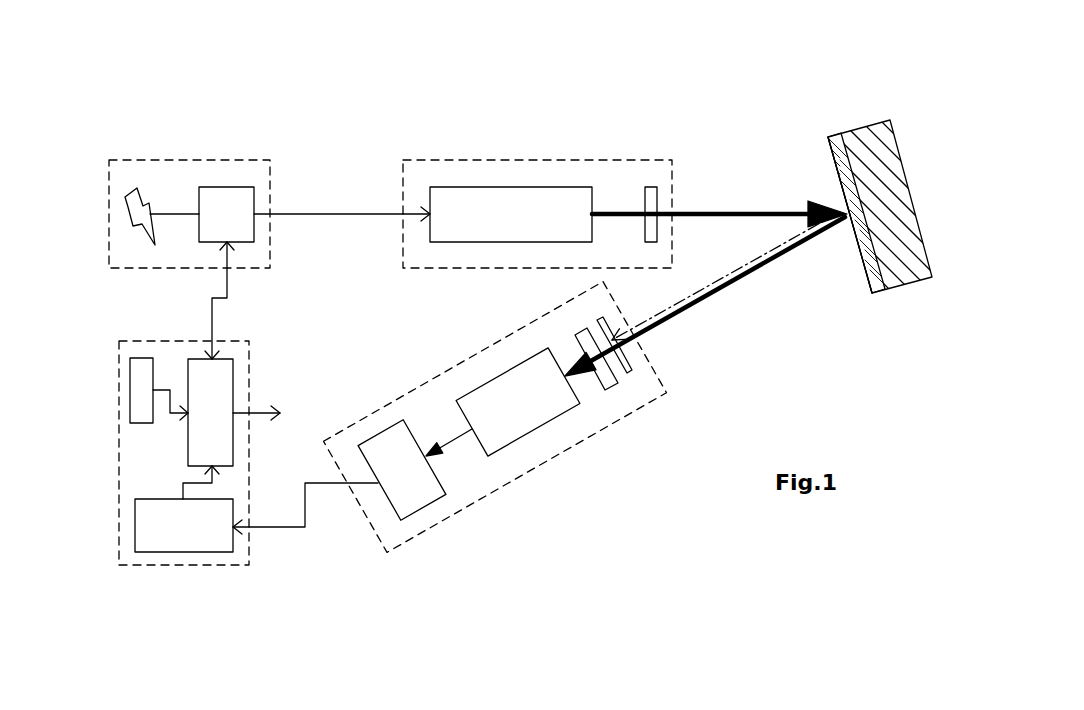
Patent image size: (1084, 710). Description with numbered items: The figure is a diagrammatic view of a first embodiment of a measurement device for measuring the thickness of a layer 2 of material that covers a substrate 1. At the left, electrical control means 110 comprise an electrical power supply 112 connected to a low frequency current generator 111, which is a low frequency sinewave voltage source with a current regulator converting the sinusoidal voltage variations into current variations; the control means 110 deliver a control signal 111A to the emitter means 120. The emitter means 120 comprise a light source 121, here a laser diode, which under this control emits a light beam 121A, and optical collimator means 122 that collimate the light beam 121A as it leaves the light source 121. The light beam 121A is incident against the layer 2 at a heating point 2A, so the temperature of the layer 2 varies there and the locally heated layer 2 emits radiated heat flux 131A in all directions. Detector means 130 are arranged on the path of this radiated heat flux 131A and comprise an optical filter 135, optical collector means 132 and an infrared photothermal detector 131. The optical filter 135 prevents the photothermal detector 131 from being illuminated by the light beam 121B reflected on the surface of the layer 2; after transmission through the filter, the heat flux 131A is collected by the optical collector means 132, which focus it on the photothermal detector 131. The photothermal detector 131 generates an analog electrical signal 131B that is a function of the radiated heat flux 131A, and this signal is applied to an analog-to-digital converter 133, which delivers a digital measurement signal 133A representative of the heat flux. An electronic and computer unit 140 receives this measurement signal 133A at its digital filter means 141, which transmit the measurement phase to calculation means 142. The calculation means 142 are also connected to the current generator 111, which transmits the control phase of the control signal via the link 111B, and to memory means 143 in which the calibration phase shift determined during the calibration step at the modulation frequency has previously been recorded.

The substrate 1 is at (880, 120).
The layer of material 2 is at (835, 137).
The heating point 2A is at (848, 223).
The control means 110 is at (178, 157).
The low frequency current generator 111 is at (229, 187).
The control signal 111A is at (306, 214).
The link 111B is at (229, 287).
The electrical power supply 112 is at (141, 238).
The emitter means 120 is at (497, 157).
The light source 121 is at (563, 187).
The light beam 121A is at (697, 210).
The reflected light beam 121B is at (733, 273).
The optical collimator means 122 is at (648, 187).
The detector means 130 is at (484, 512).
The infrared photothermal detector 131 is at (533, 437).
The radiated heat flux 131A is at (723, 280).
The analog electrical signal 131B is at (450, 438).
The optical collector means 132 is at (612, 410).
The analog-to-digital converter 133 is at (430, 507).
The measurement signal 133A is at (308, 507).
The optical filter 135 is at (642, 355).
The electronic and computer unit 140 is at (138, 568).
The digital filter means 141 is at (200, 552).
The calculation means 142 is at (188, 420).
The memory means 143 is at (130, 380).